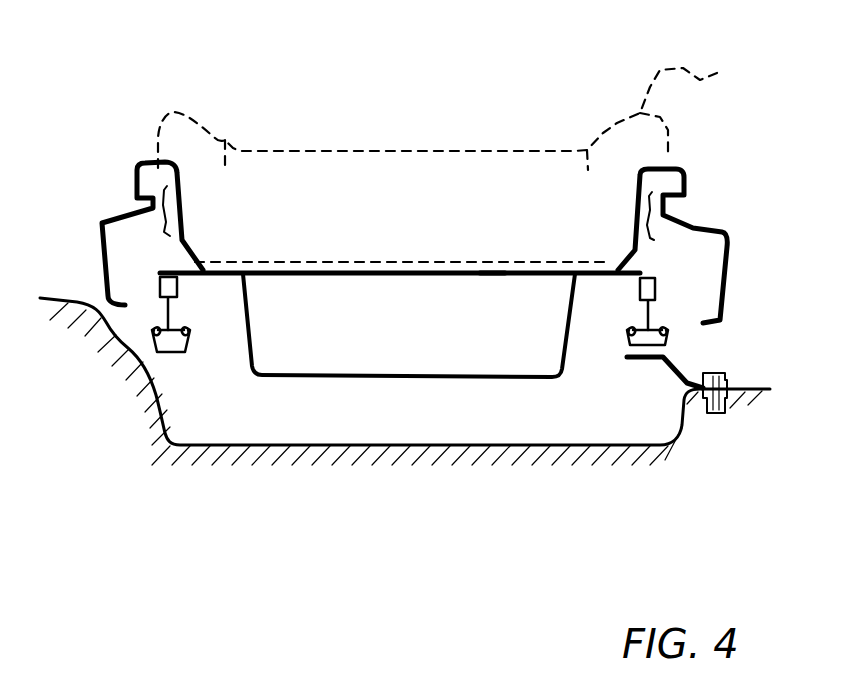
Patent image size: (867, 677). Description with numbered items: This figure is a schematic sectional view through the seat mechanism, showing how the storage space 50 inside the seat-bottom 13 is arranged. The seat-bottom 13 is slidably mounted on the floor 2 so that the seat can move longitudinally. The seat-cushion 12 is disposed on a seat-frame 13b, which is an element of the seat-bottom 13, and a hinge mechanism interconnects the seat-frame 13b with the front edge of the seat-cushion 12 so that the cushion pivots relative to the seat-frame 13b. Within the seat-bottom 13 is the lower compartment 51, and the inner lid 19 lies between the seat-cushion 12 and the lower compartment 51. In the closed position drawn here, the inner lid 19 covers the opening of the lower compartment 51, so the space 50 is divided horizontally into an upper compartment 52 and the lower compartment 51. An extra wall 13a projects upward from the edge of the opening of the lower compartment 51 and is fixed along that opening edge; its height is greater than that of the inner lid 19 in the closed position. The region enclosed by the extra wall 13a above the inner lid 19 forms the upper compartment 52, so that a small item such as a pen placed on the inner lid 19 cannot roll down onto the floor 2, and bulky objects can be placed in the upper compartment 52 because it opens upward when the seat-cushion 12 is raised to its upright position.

The floor 2 is at (694, 472).
The seat-cushion 12 is at (446, 106).
The seat-bottom 13 is at (717, 254).
The extra wall 13a is at (627, 180).
The seat-frame 13b is at (653, 235).
The inner lid 19 is at (493, 277).
The space 50 is at (465, 279).
The lower compartment 51 is at (362, 358).
The upper compartment 52 is at (364, 222).